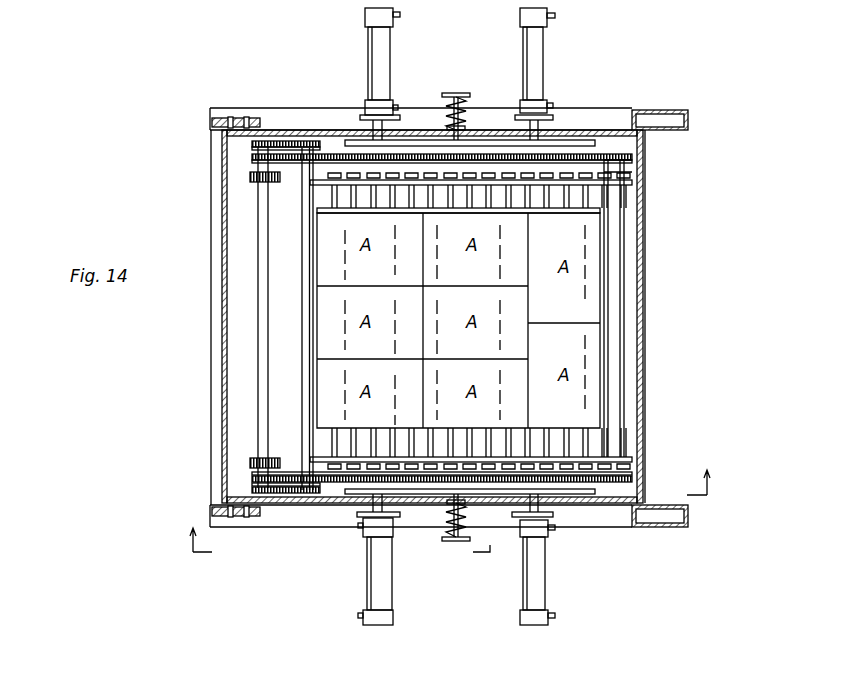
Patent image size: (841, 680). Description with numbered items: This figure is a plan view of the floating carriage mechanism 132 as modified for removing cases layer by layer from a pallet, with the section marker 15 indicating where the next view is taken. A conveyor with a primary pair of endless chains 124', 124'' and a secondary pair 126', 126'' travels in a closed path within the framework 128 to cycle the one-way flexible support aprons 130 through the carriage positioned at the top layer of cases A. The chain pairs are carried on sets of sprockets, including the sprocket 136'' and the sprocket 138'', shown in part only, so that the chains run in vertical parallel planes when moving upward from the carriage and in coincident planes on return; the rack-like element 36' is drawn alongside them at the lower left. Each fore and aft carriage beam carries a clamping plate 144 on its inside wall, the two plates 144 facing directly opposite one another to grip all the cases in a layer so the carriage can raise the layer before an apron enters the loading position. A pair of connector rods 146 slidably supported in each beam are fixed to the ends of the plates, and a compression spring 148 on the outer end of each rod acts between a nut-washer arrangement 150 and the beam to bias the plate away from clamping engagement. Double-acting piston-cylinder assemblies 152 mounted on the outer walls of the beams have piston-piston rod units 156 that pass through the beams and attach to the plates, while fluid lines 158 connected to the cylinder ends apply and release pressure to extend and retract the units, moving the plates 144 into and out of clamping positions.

The section line for FIG. 15 is at (432, 512).
The rack bar 36' is at (278, 525).
The primary set of endless chains 124' is at (286, 533).
The primary set of endless chains 124'' is at (288, 117).
The secondary set of endless chains 126' is at (442, 515).
The secondary set of endless chains 126'' is at (442, 129).
The framework 128 is at (696, 102).
The one-way flexible support apron 130 is at (625, 458).
The floating carriage mechanism 132 is at (655, 271).
The sprocket 136'' is at (279, 115).
The sprocket 138'' is at (217, 317).
The clamping plate 144 is at (440, 141).
The connector rod 146 is at (468, 111).
The compression spring 148 is at (445, 101).
The nut-washer arrangement 150 is at (456, 92).
The double-acting piston-cylinder assembly 152 is at (366, 53).
The piston-piston rod unit 156 is at (375, 124).
The fluid line 158 is at (400, 14).